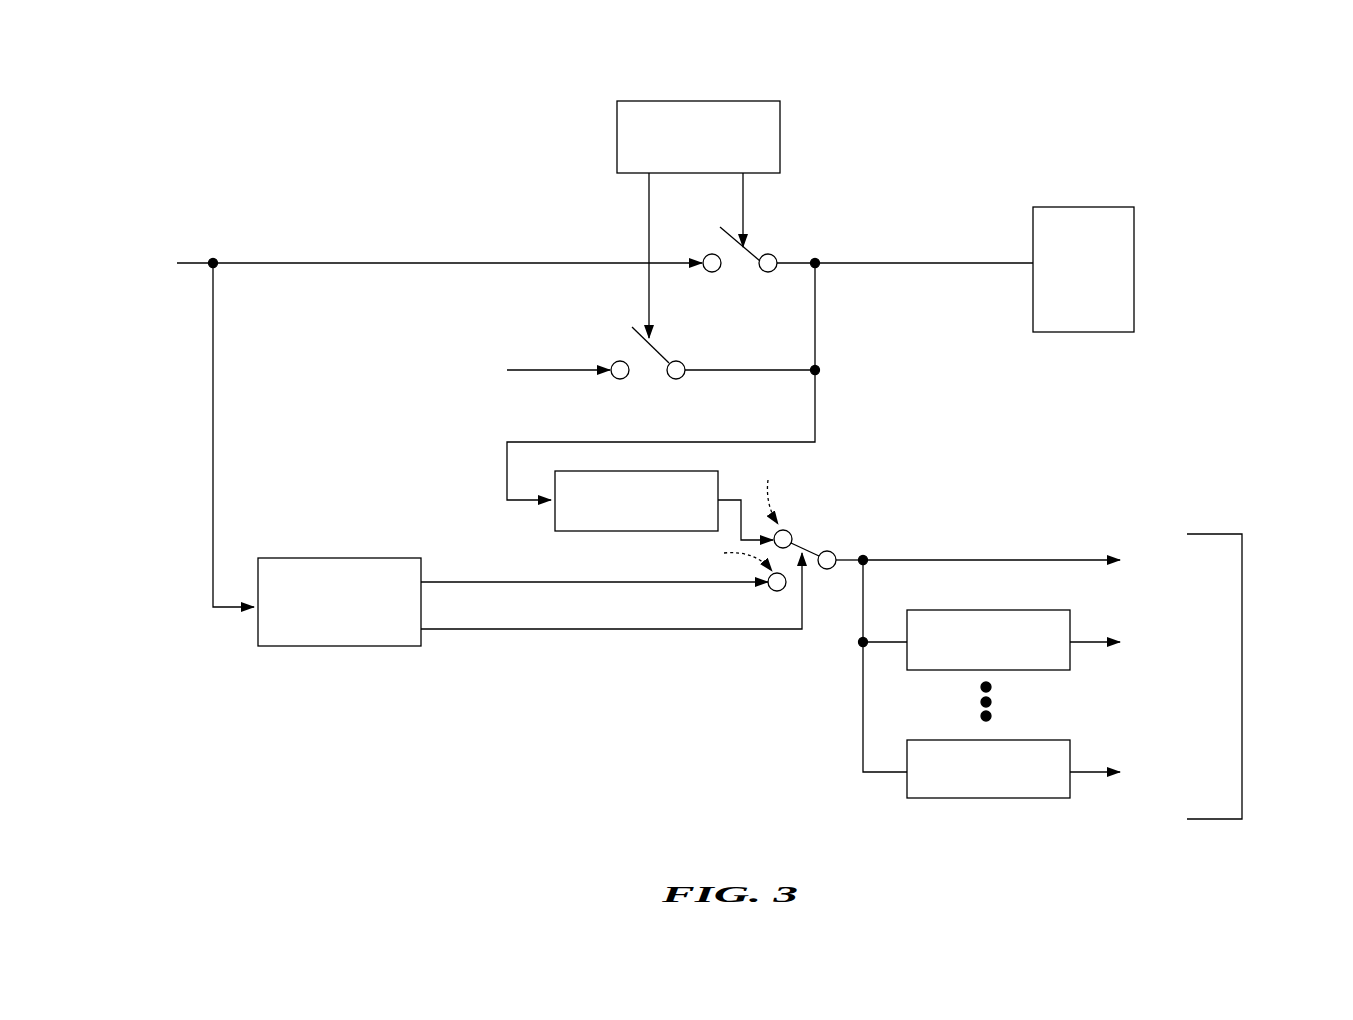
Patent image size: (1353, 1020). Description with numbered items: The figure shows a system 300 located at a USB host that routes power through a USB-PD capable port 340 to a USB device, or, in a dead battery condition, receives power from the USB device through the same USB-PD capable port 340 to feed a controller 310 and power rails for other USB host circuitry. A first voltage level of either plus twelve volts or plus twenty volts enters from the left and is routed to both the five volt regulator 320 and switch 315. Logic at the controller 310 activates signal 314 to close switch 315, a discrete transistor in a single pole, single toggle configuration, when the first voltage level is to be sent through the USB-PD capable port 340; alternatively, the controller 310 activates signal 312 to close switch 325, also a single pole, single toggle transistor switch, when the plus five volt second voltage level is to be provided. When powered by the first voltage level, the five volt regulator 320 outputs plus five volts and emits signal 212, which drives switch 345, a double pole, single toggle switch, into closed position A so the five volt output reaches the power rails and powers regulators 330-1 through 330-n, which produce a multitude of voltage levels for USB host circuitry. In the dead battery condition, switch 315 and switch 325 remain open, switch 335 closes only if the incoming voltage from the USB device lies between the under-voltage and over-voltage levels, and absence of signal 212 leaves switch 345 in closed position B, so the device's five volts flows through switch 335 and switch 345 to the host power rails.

The system 300 is at (700, 422).
The controller 310 is at (698, 137).
The signal 312 is at (616, 255).
The signal 314 is at (777, 210).
The switch 315 is at (740, 276).
The 5V regulator 320 is at (513, 602).
The switch 325 is at (618, 378).
The switch 335 is at (664, 505).
The switch 345 is at (747, 524).
The USB-PD capable port 340 is at (1083, 269).
The regulator 330-1 is at (1052, 640).
The regulator 330-n is at (1051, 766).
The signal 212 is at (611, 605).